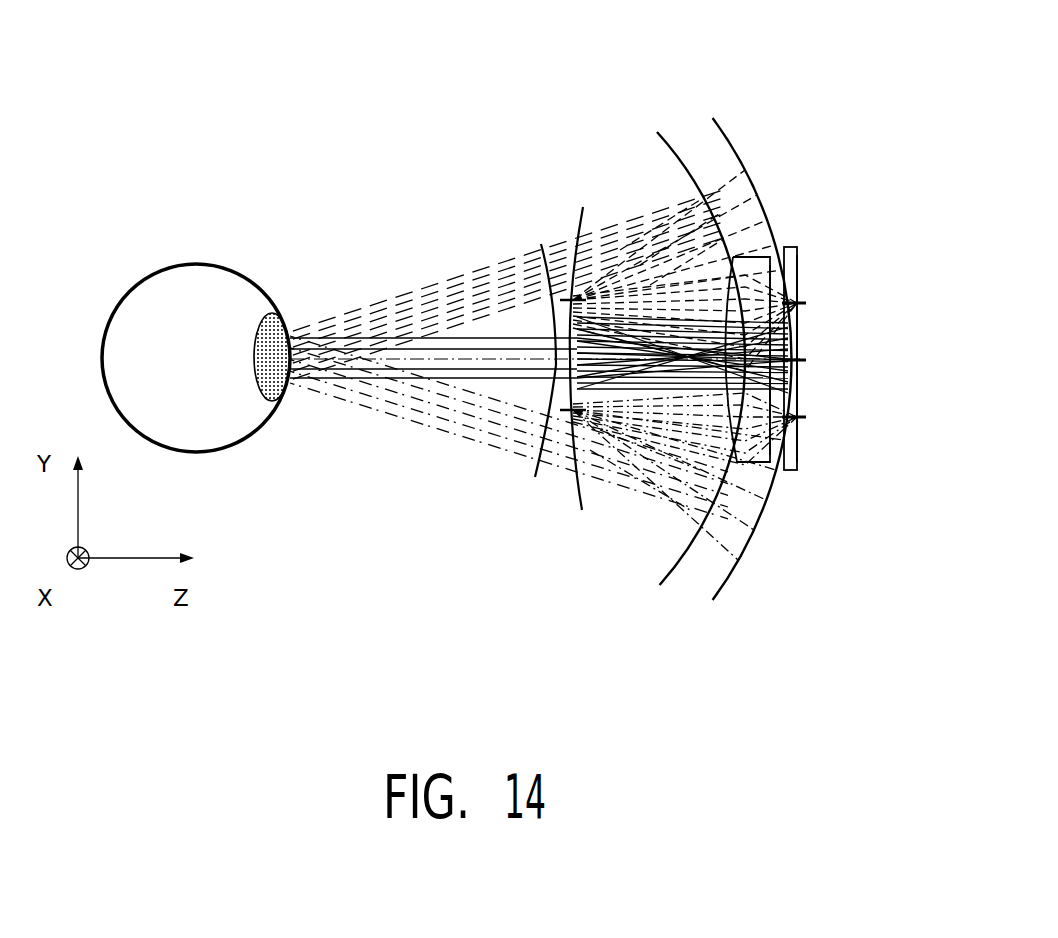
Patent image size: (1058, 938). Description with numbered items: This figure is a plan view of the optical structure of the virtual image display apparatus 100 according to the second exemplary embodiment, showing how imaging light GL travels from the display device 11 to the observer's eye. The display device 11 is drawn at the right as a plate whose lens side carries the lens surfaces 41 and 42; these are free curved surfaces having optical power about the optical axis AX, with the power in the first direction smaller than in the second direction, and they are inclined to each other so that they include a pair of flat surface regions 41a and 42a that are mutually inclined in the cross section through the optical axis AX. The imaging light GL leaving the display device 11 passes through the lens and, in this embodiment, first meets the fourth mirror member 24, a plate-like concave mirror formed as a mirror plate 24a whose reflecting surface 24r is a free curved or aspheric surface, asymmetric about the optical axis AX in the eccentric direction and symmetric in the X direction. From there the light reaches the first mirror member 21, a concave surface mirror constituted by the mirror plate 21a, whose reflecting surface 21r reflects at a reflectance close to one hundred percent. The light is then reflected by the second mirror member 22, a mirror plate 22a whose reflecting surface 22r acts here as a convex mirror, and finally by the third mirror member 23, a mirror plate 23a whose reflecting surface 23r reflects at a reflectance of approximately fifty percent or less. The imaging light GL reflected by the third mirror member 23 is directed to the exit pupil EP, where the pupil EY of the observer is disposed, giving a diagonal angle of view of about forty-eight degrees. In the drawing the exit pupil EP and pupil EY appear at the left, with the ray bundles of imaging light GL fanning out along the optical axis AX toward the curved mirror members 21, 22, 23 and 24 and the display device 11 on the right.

The virtual image display apparatus 100 is at (348, 141).
The display device 11 is at (818, 287).
The first mirror member 21 is at (732, 189).
The mirror plate 21a is at (731, 189).
The reflecting surface 21r is at (734, 150).
The second mirror member 22 is at (512, 483).
The mirror plate 22a is at (528, 488).
The reflecting surface 22r is at (553, 398).
The third mirror member 23 is at (707, 533).
The mirror plate 23a is at (701, 534).
The reflecting surface 23r is at (688, 546).
The fourth mirror member 24 is at (537, 208).
The mirror plate 24a is at (561, 208).
The reflecting surface 24r is at (571, 300).
The lens surface 41 is at (809, 283).
The flat surface region 41a is at (772, 385).
The lens surface 42 is at (848, 312).
The flat surface region 42a is at (797, 363).
The pupil EY is at (268, 338).
The exit pupil EP is at (285, 396).
The imaging light GL is at (400, 283).
The optical axis AX is at (351, 362).